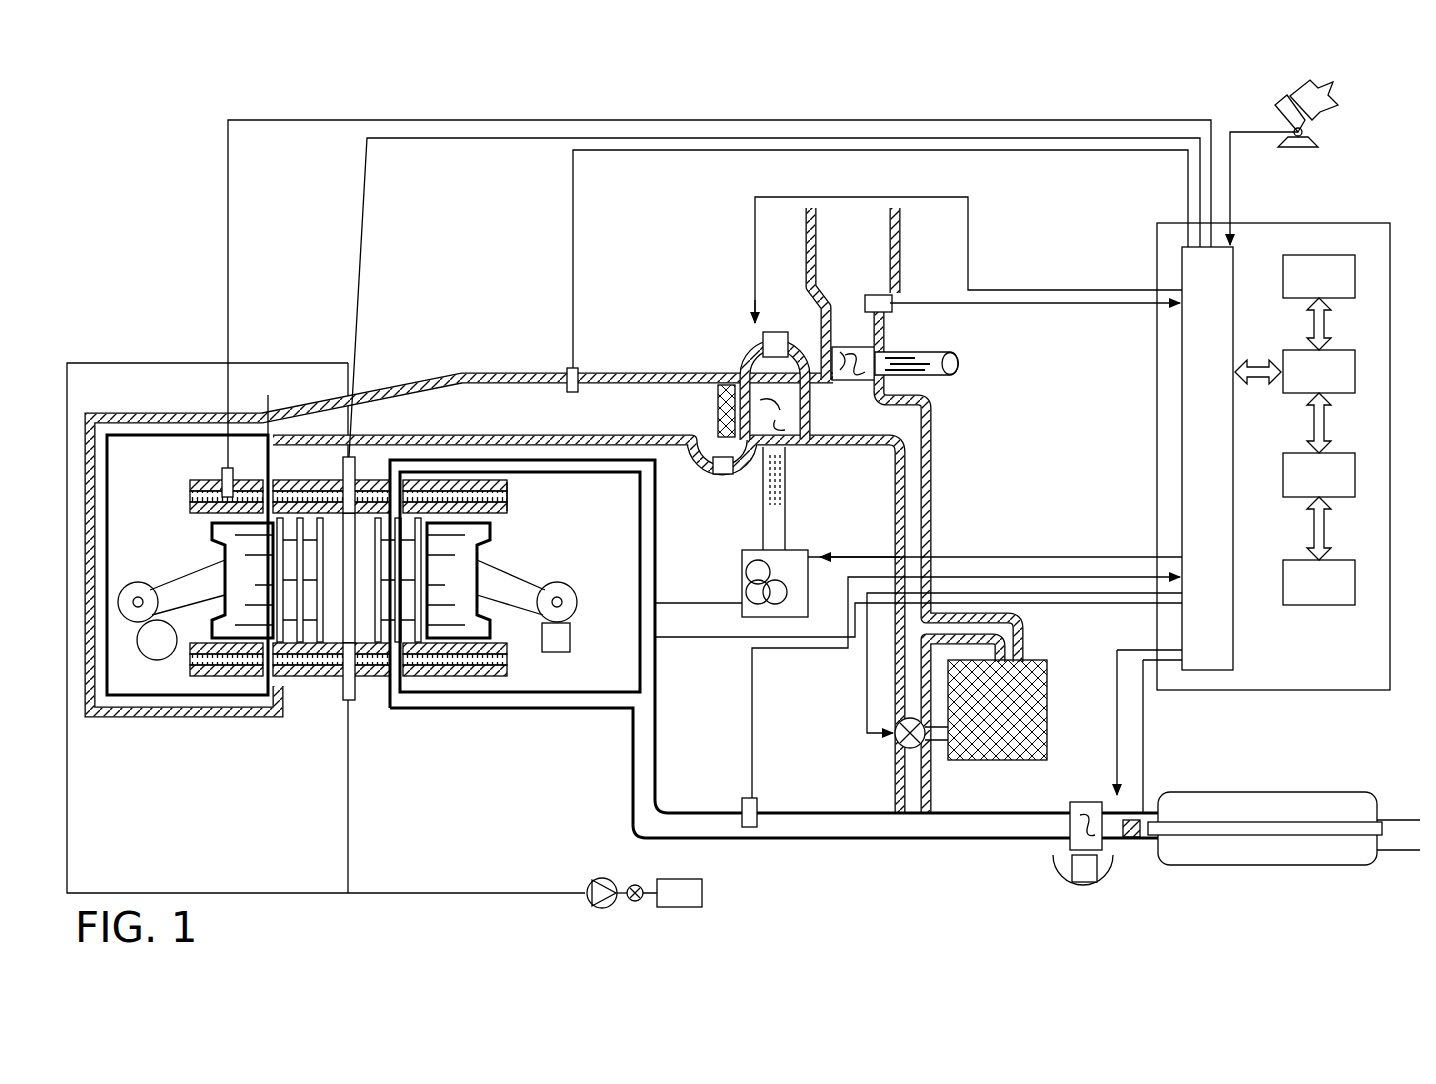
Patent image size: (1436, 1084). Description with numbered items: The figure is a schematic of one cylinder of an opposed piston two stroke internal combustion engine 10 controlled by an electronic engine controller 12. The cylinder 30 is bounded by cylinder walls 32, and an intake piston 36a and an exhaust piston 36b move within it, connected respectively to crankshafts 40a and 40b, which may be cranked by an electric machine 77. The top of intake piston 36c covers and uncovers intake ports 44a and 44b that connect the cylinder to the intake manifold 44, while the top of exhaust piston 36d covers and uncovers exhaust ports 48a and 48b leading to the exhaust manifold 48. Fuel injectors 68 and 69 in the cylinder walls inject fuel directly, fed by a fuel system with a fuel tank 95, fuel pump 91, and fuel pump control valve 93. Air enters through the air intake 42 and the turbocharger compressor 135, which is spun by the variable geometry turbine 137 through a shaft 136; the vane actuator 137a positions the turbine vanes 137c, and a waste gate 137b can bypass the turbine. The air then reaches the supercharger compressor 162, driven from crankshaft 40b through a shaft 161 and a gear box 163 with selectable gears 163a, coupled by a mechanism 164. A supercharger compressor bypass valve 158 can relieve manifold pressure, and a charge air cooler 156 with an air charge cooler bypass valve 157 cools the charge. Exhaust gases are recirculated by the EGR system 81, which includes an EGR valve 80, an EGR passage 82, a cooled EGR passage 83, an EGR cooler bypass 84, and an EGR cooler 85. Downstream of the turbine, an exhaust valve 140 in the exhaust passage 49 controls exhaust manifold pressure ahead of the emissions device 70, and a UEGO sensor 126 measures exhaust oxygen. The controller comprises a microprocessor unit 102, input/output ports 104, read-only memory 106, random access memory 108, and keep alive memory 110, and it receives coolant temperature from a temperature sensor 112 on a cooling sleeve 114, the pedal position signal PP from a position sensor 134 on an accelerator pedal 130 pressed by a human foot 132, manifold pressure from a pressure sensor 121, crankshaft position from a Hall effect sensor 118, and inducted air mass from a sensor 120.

The opposed piston two stroke internal combustion engine 10 is at (192, 350).
The electronic engine controller 12 is at (1355, 223).
The cylinder 30 is at (342, 653).
The cylinder walls 32 is at (493, 513).
The intake piston 36a is at (242, 562).
The exhaust piston 36b is at (455, 563).
The top of intake piston 36c is at (323, 497).
The top of exhaust piston 36d is at (371, 630).
The crankshaft 40a is at (130, 622).
The crankshaft 40b is at (565, 588).
The air intake 42 is at (868, 283).
The intake manifold 44 is at (530, 421).
The intake port 44a is at (262, 695).
The intake port 44b is at (271, 442).
The exhaust manifold 48 is at (550, 473).
The exhaust port 48a is at (398, 678).
The exhaust port 48b is at (395, 478).
The exhaust passage 49 is at (1150, 810).
The fuel injector 68 is at (355, 460).
The fuel injector 69 is at (348, 702).
The emissions device 70 is at (1200, 792).
The electric machine 77 is at (157, 640).
The EGR valve 80 is at (896, 745).
The EGR system 81 is at (855, 722).
The EGR passage 82 is at (931, 495).
The cooled EGR passage 83 is at (1005, 645).
The EGR cooler bypass 84 is at (913, 700).
The EGR cooler 85 is at (955, 762).
The fuel pump 91 is at (600, 878).
The fuel pump control valve 93 is at (630, 900).
The fuel tank 95 is at (693, 905).
The microprocessor unit 102 is at (1355, 365).
The input/output ports 104 is at (1236, 252).
The read-only memory 106 is at (1355, 270).
The random access memory 108 is at (1355, 470).
The keep alive memory 110 is at (1355, 575).
The temperature sensor 112 is at (222, 472).
The cooling sleeve 114 is at (198, 497).
The Hall effect sensor 118 is at (558, 652).
The air mass sensor 120 is at (893, 298).
The pressure sensor 121 is at (568, 368).
The universal exhaust gas oxygen sensor 126 is at (745, 805).
The accelerator pedal 130 is at (1282, 112).
The human foot 132 is at (1335, 97).
The position sensor 134 is at (1318, 140).
The turbocharger compressor 135 is at (872, 358).
The shaft 136 is at (925, 380).
The turbocharger variable geometry turbine 137 is at (1068, 810).
The vane actuator 137a is at (1062, 843).
The waste gate 137b is at (1085, 880).
The variable geometry turbine vanes 137c is at (1100, 850).
The exhaust valve 140 is at (1135, 840).
The charge air cooler 156 is at (727, 385).
The air charge cooler bypass valve 157 is at (722, 475).
The supercharger compressor bypass valve 158 is at (780, 332).
The shaft 161 is at (760, 530).
The supercharger compressor 162 is at (790, 440).
The gear box 163 is at (740, 585).
The gears 163a is at (768, 568).
The mechanism 164 is at (740, 603).
The pedal position signal PP is at (1232, 192).